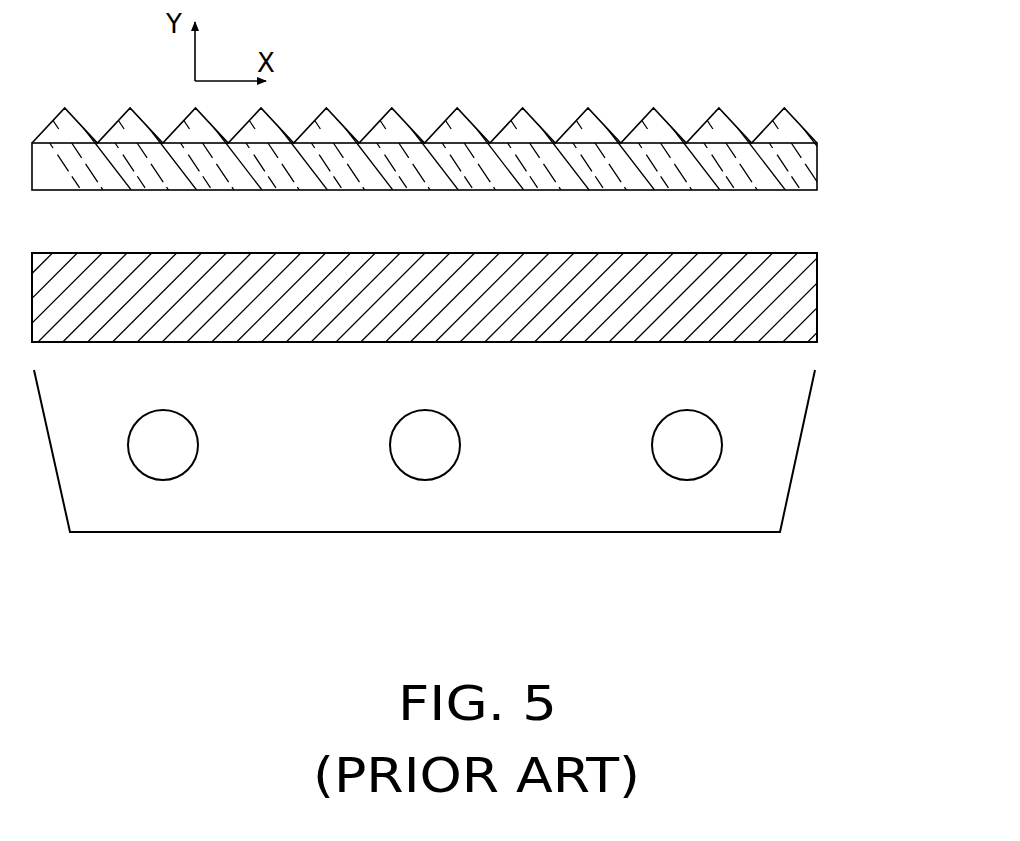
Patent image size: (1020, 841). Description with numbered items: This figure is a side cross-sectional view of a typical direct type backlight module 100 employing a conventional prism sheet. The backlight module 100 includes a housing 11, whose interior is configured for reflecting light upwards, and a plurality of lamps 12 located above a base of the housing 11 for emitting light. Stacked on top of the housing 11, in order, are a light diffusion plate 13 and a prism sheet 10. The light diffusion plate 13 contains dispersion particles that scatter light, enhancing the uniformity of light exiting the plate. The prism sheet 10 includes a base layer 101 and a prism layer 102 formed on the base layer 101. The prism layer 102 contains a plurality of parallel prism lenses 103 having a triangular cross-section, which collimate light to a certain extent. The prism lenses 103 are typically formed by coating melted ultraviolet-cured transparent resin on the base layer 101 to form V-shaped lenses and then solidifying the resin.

The backlight module 100 is at (565, 78).
The prism sheet 10 is at (876, 72).
The base layer 101 is at (752, 190).
The prism layer 102 is at (793, 134).
The prism lenses 103 is at (666, 119).
The light diffusion plate 13 is at (806, 301).
The housing 11 is at (803, 428).
The lamps 12 is at (694, 465).